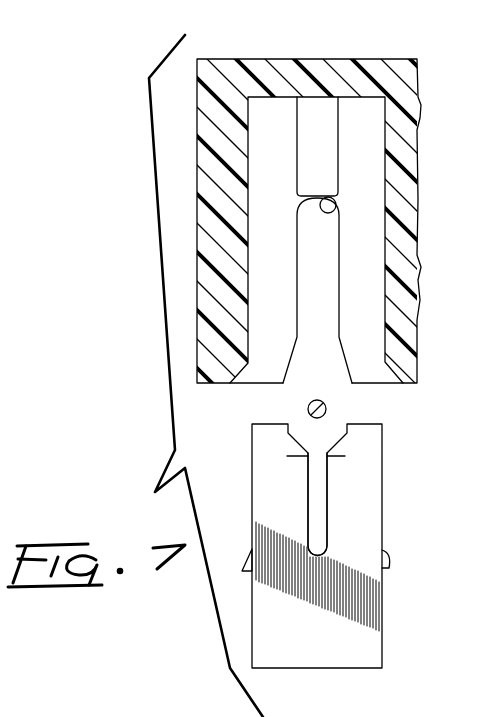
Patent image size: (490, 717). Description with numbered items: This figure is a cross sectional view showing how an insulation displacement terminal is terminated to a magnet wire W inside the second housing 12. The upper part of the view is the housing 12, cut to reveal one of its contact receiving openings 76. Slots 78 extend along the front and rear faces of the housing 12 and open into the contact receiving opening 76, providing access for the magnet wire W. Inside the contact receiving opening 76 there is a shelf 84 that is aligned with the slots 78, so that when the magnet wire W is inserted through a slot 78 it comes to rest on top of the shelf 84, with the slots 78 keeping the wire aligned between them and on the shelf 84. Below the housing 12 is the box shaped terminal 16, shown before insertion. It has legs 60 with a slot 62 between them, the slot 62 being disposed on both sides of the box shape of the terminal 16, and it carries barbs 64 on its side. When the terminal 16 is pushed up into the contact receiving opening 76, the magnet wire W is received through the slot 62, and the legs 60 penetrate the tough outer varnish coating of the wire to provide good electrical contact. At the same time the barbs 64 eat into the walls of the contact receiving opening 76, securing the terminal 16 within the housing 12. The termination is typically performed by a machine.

The second housing 12 is at (265, 60).
The terminal 16 is at (372, 637).
The legs 60 is at (368, 479).
The slot 62 is at (318, 509).
The barbs 64 is at (390, 566).
The contact receiving openings 76 is at (360, 227).
The slots 78 is at (323, 262).
The shelf 84 is at (335, 208).
The magnet wire W is at (326, 405).